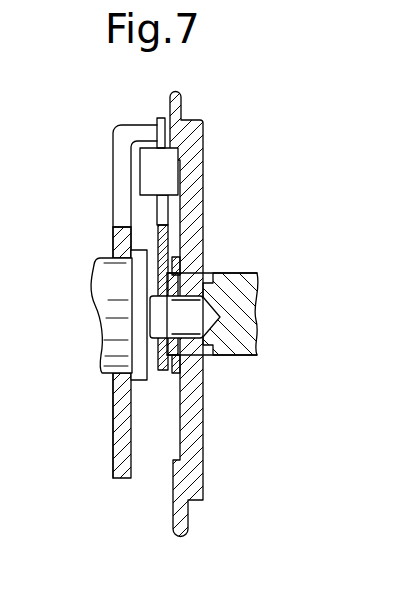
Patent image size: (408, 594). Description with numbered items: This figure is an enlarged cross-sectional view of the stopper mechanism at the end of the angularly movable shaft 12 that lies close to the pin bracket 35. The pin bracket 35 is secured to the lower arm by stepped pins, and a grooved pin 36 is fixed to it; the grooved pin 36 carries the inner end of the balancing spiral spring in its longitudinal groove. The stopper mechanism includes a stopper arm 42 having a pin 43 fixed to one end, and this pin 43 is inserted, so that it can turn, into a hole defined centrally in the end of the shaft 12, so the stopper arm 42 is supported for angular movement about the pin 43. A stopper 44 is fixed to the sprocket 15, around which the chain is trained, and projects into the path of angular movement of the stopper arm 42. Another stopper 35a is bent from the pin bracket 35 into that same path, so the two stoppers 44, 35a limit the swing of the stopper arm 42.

The angularly movable shaft 12 is at (257, 312).
The sprocket 15 is at (181, 97).
The pin bracket 35 is at (113, 188).
The stopper 35a is at (140, 127).
The grooved pin 36 is at (100, 358).
The stopper arm 42 is at (163, 216).
The pin 43 is at (202, 358).
The stopper 44 is at (173, 180).